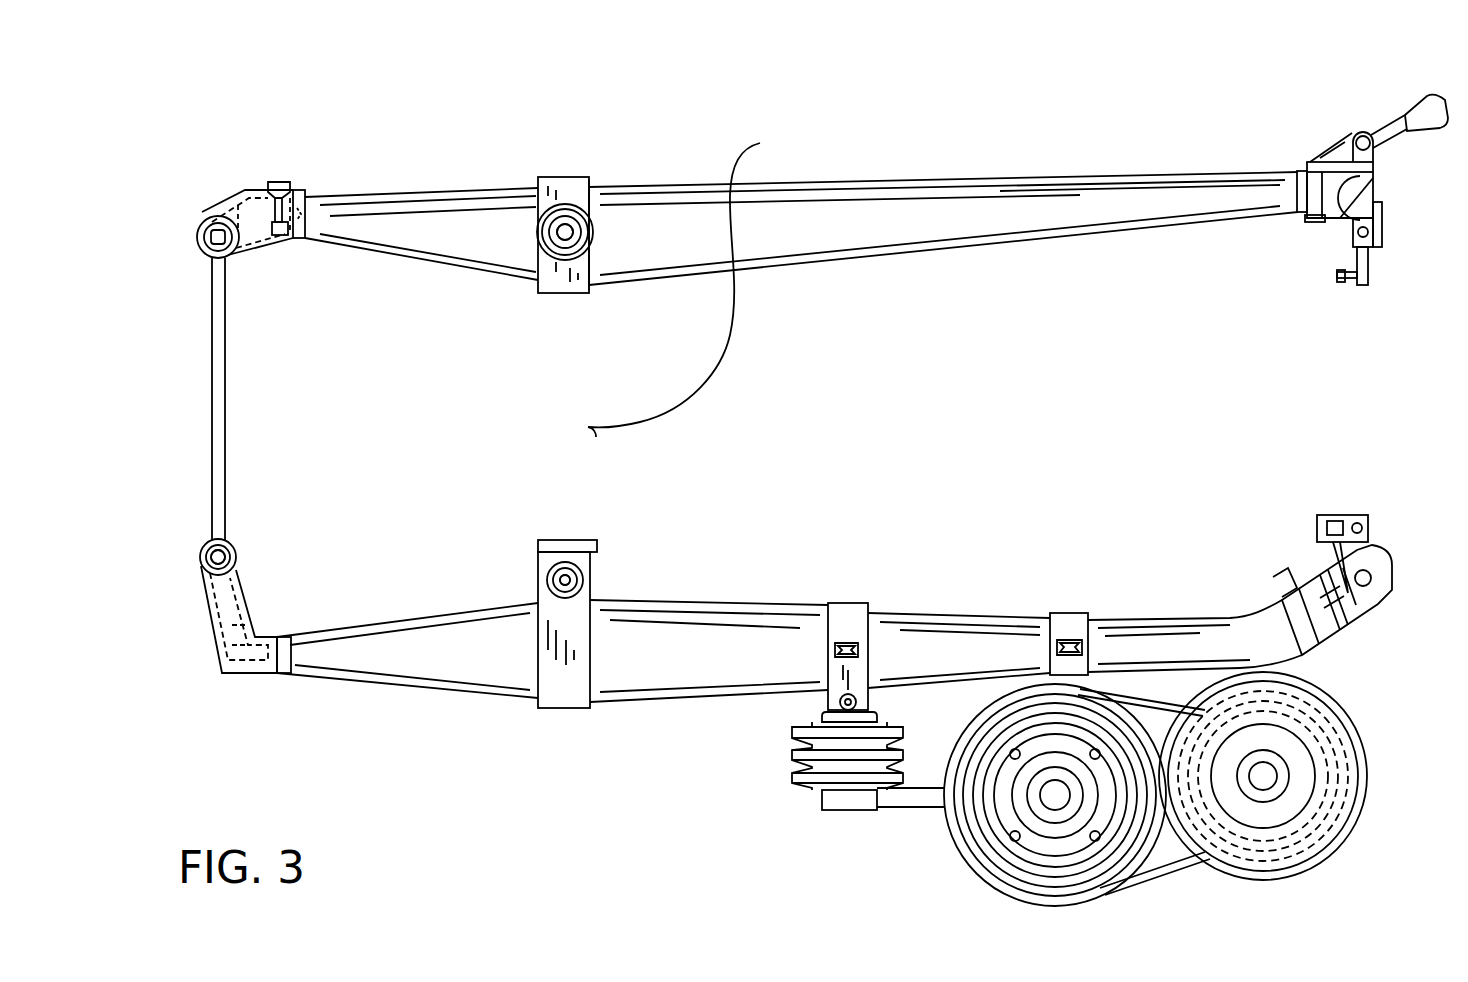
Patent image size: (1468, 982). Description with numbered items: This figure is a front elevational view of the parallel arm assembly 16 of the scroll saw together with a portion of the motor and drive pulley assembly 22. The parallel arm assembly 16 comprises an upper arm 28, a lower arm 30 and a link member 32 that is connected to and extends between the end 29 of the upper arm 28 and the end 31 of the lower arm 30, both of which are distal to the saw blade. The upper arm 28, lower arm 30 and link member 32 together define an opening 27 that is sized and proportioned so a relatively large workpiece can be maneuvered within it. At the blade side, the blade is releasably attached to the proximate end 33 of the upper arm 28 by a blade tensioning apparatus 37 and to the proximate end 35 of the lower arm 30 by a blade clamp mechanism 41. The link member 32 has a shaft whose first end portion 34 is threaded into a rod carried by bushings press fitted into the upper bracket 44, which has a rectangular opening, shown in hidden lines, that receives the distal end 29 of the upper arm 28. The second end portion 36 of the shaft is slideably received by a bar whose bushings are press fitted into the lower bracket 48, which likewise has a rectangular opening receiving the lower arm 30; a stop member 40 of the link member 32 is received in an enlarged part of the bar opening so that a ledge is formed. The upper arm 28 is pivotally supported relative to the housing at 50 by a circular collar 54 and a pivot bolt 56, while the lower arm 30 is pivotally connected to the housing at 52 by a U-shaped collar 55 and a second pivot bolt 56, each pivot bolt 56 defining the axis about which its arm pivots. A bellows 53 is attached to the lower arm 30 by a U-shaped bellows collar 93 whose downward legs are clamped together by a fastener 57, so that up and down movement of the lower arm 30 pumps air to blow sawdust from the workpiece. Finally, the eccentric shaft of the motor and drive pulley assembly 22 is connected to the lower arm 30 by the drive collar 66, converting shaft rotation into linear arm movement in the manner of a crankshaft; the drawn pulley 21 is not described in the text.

The parallel arm assembly 16 is at (832, 180).
The motor and drive pulley assembly 22 is at (1367, 785).
The opening 27 is at (696, 280).
The upper arm 28 is at (1010, 178).
The end of the upper arm 29 is at (322, 196).
The lower arm 30 is at (1008, 616).
The end of the lower arm 31 is at (292, 685).
The link member 32 is at (230, 437).
The proximate end of the upper arm 33 is at (1255, 174).
The first end portion of the shaft 34 is at (203, 232).
The proximate end of the lower arm 35 is at (1335, 645).
The second end portion of the shaft 36 is at (202, 537).
The blade tensioning apparatus 37 is at (1380, 190).
The stop member 40 is at (238, 565).
The blade clamp mechanism 41 is at (1368, 527).
The upper bracket 44 is at (215, 200).
The lower bracket 48 is at (255, 602).
The pivot location of the upper arm 50 is at (590, 218).
The pivot location of the lower arm 52 is at (590, 562).
The bellows 53 is at (806, 785).
The collar 54 is at (596, 275).
The collar 55 is at (538, 670).
The pivot bolt 56 is at (555, 245).
The fastener 57 is at (856, 698).
The drive collar 66 is at (1095, 620).
The bellows collar 93 is at (846, 606).
The drive pulley 21 is at (1055, 795).